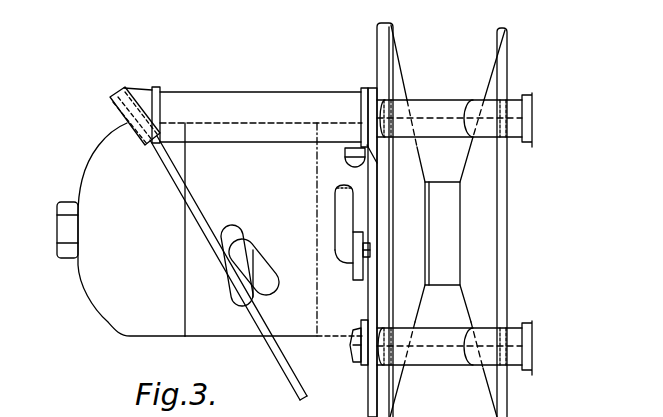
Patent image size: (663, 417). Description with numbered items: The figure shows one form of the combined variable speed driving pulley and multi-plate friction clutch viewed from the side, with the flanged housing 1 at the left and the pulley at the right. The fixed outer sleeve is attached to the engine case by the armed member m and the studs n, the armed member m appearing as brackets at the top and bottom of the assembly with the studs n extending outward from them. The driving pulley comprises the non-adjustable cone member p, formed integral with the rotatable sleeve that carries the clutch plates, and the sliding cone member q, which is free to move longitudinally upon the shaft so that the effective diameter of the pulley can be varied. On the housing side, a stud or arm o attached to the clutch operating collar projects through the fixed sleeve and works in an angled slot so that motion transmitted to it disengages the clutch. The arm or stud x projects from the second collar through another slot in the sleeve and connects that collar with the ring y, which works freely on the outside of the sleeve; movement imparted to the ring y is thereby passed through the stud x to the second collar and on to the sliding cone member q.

The housing body 1 is at (235, 327).
The stud or arm o is at (243, 262).
The ring y is at (323, 250).
The arm or stud x is at (355, 267).
The armed member m is at (373, 97).
The sliding cone member q is at (495, 265).
The non-adjustable cone member p is at (412, 168).
The studs n is at (447, 110).